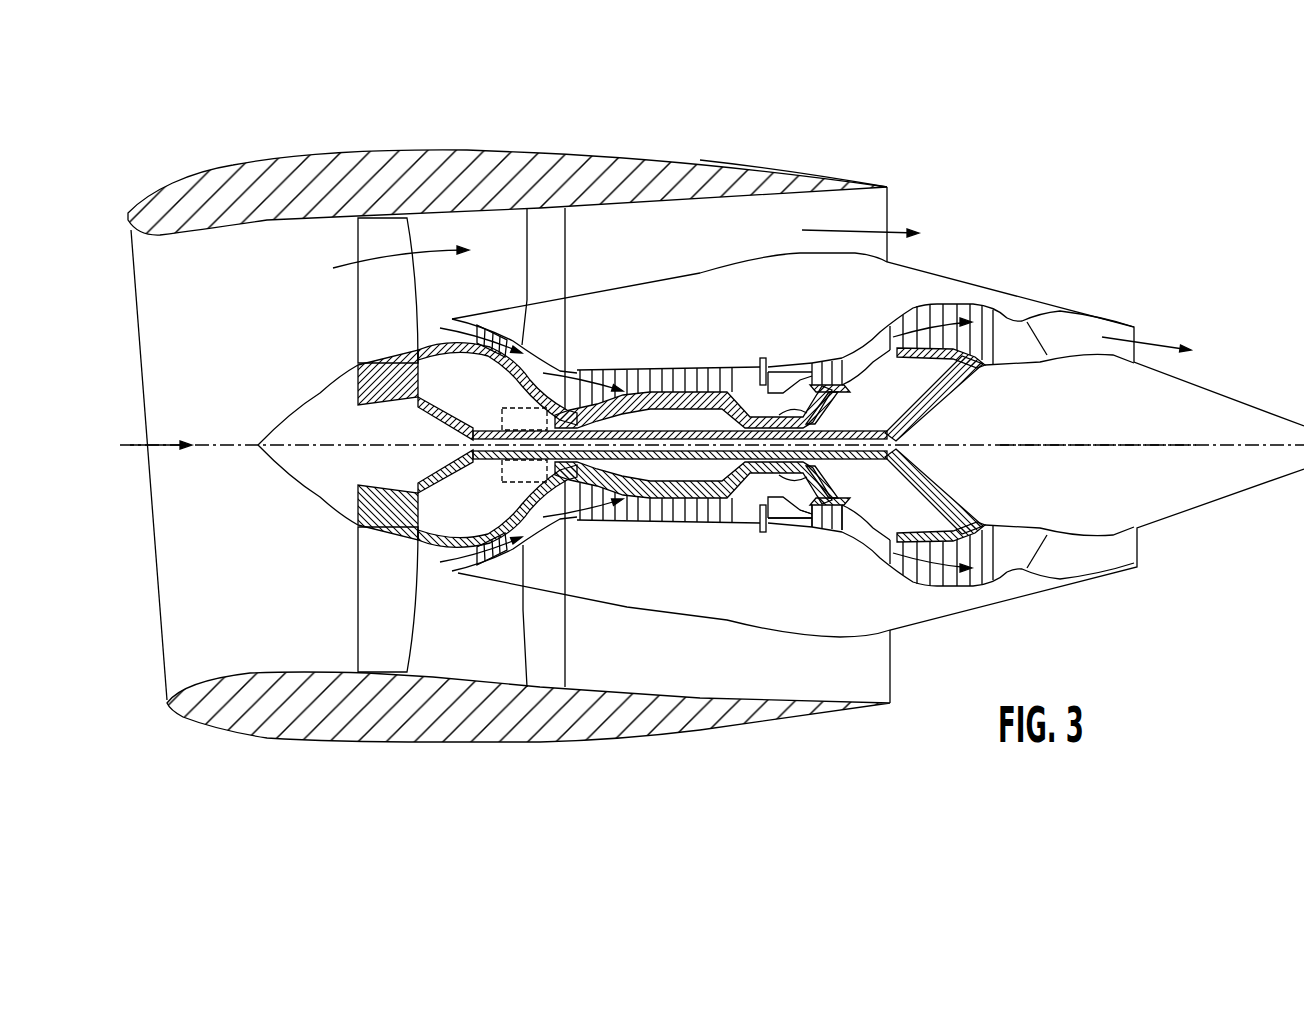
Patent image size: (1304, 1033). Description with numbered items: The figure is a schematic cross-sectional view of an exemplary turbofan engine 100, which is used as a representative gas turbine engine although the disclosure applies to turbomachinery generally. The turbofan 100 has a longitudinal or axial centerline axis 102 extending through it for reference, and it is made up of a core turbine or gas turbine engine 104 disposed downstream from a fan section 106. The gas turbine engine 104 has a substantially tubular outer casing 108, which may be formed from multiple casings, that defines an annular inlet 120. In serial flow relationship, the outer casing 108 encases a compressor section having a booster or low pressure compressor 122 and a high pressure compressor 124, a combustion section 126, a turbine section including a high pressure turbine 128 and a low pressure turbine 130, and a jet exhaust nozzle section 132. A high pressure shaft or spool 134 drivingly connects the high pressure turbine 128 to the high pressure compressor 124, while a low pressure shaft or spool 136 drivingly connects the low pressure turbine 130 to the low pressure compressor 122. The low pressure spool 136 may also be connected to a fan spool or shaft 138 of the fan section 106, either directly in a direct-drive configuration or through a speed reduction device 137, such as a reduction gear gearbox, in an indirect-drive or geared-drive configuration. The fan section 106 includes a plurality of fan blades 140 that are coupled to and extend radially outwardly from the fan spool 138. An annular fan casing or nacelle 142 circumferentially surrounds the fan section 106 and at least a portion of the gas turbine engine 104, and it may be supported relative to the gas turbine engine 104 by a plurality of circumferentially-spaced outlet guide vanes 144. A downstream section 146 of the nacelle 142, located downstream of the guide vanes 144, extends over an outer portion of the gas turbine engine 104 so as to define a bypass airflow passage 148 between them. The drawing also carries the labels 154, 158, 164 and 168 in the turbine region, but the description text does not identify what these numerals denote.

The turbofan engine 100 is at (1038, 170).
The longitudinal or axial centerline axis 102 is at (1085, 443).
The core turbine or gas turbine engine 104 is at (741, 328).
The fan section 106 is at (400, 135).
The outer casing 108 is at (723, 622).
The annular inlet 120 is at (470, 565).
The booster or low pressure (LP) compressor 122 is at (525, 532).
The high pressure (HP) compressor 124 is at (597, 512).
The combustion section 126 is at (780, 534).
The high pressure (HP) turbine 128 is at (842, 518).
The low pressure (LP) turbine 130 is at (985, 596).
The jet exhaust nozzle section 132 is at (1138, 330).
The high pressure (HP) shaft or spool 134 is at (808, 415).
The low pressure (LP) shaft or spool 136 is at (527, 430).
The speed reduction device 137 is at (533, 407).
The fan spool or shaft 138 is at (411, 408).
The fan blades 140 is at (357, 622).
The annular fan casing or nacelle 142 is at (410, 742).
The outlet guide vanes 144 is at (567, 228).
The downstream section of the nacelle 146 is at (788, 170).
The bypass airflow passage 148 is at (722, 237).
The combustor liner 154 is at (798, 534).
The turbine nozzle 158 is at (800, 540).
The turbine rotor blades 164 is at (823, 540).
The turbine stator vanes 168 is at (840, 540).